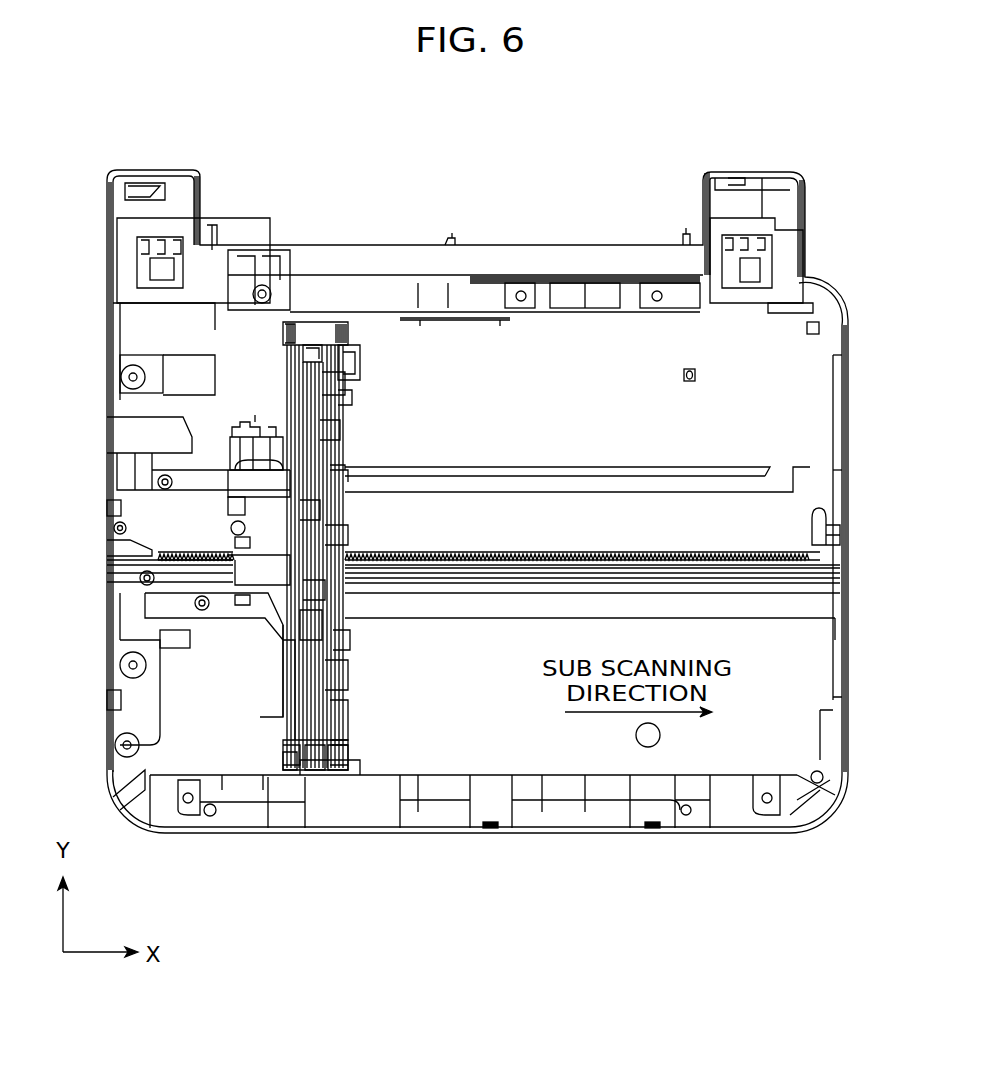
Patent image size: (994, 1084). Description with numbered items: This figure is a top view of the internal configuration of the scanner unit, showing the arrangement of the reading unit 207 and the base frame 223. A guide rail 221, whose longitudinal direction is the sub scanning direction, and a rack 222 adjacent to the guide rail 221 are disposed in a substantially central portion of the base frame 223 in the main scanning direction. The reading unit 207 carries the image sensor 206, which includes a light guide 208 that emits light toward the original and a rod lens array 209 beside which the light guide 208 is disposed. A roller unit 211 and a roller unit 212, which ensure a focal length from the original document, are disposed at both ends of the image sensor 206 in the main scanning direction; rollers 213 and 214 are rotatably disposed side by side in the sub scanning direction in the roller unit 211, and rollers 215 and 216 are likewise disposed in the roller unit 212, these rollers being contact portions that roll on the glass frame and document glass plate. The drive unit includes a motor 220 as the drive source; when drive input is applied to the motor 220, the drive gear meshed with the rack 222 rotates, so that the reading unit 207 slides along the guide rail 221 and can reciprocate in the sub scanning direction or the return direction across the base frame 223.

The image sensor 206 is at (332, 423).
The reading unit 207 is at (263, 555).
The light guide 208 is at (322, 615).
The rod lens array 209 is at (297, 658).
The roller unit 211 is at (320, 327).
The roller unit 212 is at (316, 760).
The roller 213 is at (290, 330).
The roller 214 is at (345, 335).
The roller 215 is at (290, 762).
The roller 216 is at (333, 763).
The motor 220 is at (240, 433).
The guide rail 221 is at (743, 568).
The rack 222 is at (735, 555).
The base frame 223 is at (793, 357).